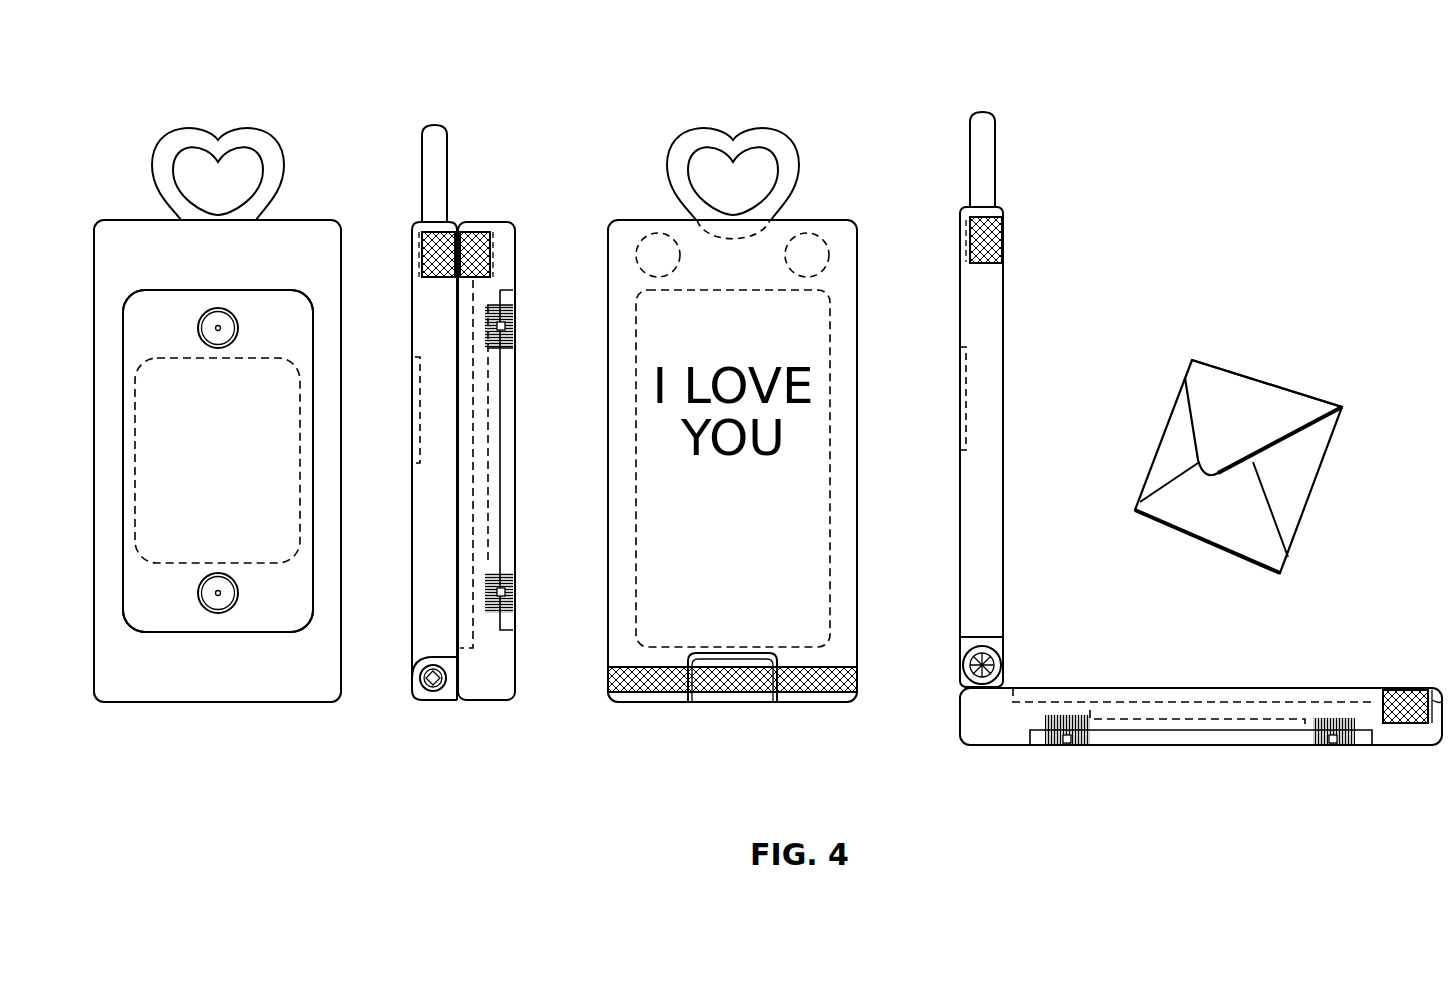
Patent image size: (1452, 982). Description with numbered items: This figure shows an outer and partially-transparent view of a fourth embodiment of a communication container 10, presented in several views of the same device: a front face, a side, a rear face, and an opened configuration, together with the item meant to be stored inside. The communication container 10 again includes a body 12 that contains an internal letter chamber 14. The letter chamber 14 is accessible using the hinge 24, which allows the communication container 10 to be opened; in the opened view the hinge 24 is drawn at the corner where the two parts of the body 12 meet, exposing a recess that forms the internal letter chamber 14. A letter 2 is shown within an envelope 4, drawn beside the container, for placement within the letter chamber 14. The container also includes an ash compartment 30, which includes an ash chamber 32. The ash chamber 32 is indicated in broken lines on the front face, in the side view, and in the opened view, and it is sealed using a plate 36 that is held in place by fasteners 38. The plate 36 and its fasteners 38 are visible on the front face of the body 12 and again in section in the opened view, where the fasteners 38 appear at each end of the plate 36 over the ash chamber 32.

The letter 2 is at (1214, 303).
The envelope 4 is at (1268, 403).
The communication container 10 is at (1222, 42).
The body 12 is at (372, 108).
The internal letter chamber 14 is at (1183, 695).
The hinge 24 is at (968, 665).
The ash compartment 30 is at (1092, 792).
The ash chamber 32 is at (1178, 768).
The plate 36 is at (155, 597).
The fasteners 38 is at (218, 597).